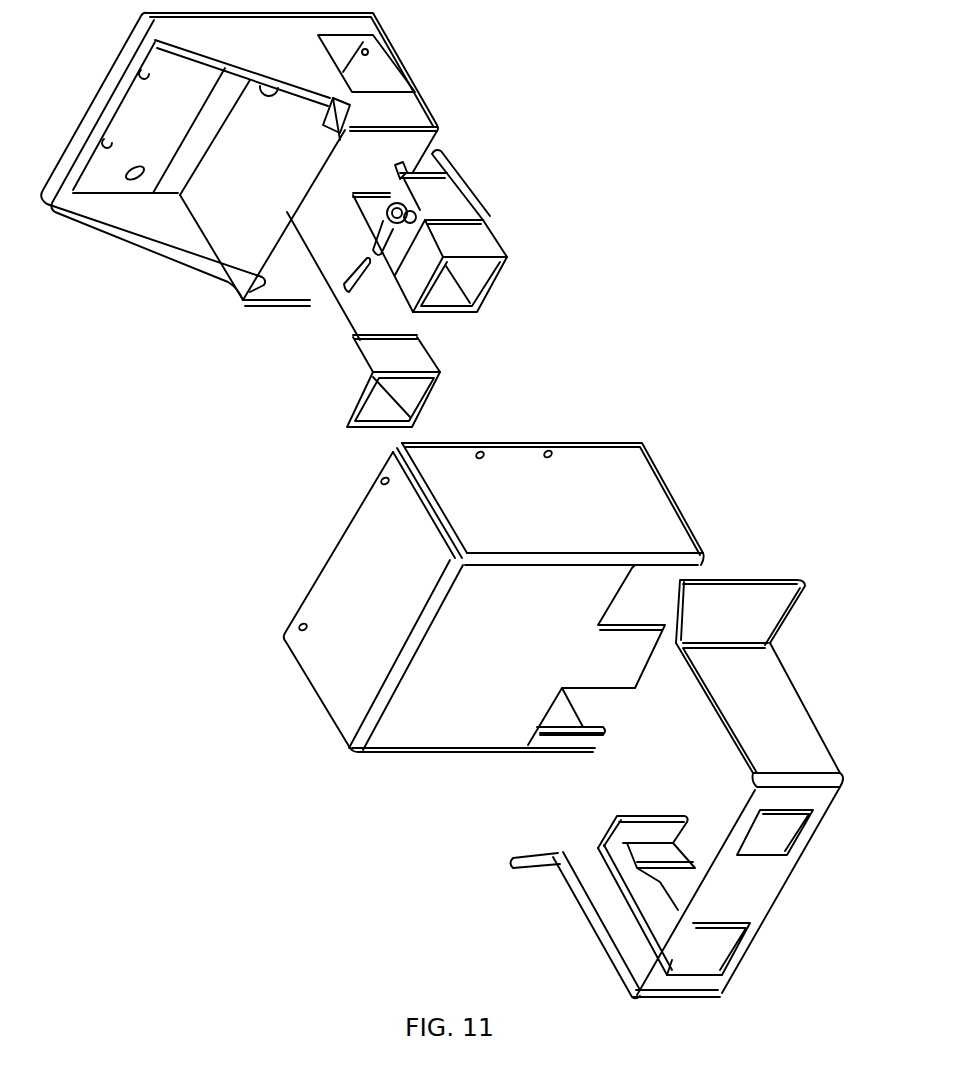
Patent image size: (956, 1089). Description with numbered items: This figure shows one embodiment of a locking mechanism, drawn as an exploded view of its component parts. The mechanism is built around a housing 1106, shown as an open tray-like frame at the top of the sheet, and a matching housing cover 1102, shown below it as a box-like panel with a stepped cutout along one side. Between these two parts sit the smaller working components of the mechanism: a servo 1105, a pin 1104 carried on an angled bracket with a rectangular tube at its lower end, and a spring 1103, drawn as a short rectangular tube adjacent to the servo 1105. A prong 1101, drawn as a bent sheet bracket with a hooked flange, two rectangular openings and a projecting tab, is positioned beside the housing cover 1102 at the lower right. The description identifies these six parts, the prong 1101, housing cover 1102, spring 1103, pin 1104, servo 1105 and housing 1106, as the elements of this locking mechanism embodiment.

The prong 1101 is at (605, 834).
The housing cover 1102 is at (340, 660).
The spring 1103 is at (450, 270).
The pin 1104 is at (335, 283).
The servo 1105 is at (435, 193).
The housing 1106 is at (410, 106).